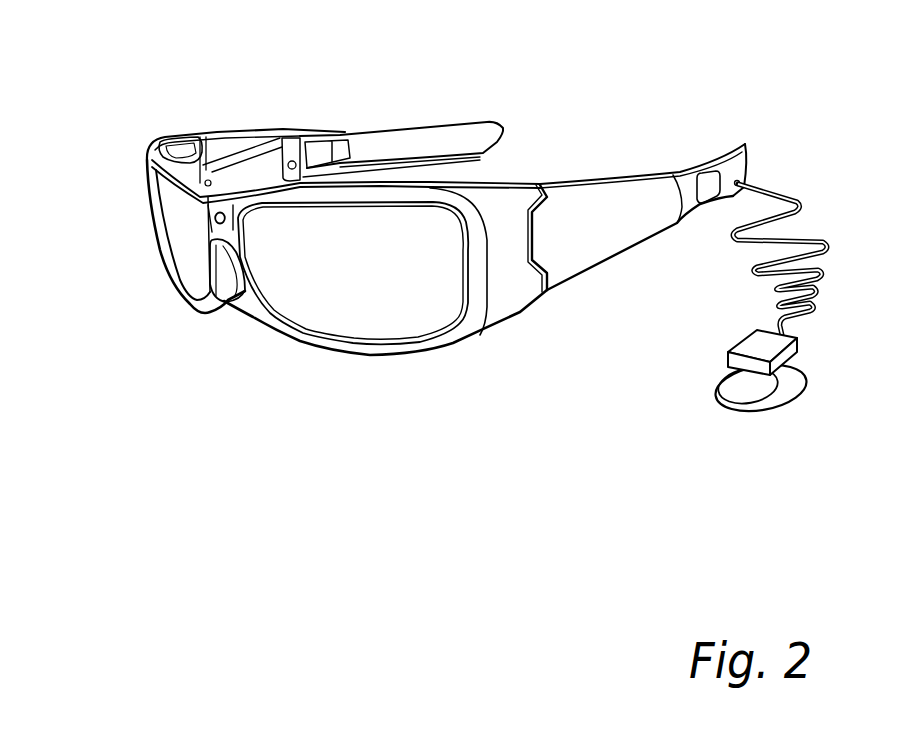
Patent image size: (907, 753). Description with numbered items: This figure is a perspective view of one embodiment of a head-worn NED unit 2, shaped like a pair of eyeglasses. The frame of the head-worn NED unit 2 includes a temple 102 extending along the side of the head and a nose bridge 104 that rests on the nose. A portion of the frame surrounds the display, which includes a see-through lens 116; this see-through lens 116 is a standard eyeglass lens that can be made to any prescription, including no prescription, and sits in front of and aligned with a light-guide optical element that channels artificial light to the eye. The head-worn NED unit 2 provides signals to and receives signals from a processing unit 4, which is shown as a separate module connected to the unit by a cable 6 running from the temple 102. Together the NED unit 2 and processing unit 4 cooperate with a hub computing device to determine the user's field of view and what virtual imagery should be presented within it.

The head-worn NED unit 2 is at (500, 318).
The processing unit 4 is at (798, 344).
The cable 6 is at (828, 248).
The temple 102 is at (398, 142).
The nose bridge 104 is at (218, 203).
The see-through lens 116 is at (187, 238).